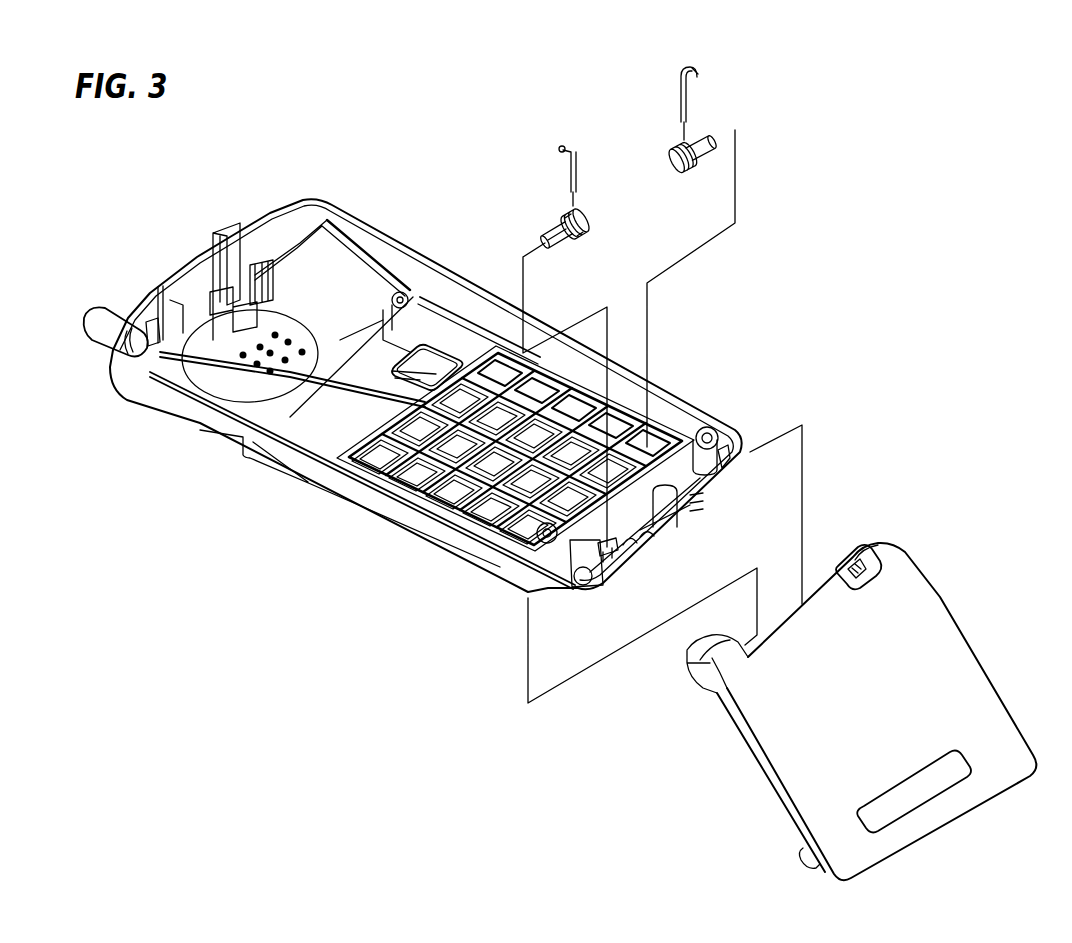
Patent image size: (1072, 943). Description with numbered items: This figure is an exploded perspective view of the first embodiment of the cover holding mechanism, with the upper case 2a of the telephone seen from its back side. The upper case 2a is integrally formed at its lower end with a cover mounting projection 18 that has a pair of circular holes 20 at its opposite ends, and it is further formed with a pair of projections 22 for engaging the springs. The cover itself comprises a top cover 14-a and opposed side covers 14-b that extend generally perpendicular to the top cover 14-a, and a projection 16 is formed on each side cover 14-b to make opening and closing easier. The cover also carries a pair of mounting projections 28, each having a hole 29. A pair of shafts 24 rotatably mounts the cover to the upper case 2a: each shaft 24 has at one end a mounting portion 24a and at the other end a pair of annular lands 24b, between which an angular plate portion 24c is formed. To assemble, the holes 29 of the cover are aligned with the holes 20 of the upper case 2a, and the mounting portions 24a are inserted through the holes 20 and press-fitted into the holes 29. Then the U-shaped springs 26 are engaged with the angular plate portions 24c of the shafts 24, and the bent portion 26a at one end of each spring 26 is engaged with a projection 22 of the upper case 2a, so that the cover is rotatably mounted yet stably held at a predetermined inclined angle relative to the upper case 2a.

The upper case 2a is at (401, 240).
The top cover 14-a is at (800, 740).
The side cover 14-b is at (748, 745).
The projection 16 is at (801, 860).
The cover mounting projection 18 is at (647, 552).
The circular hole 20 is at (578, 580).
The projection 22 is at (600, 552).
The shaft 24 is at (707, 116).
The mounting portion 24a is at (557, 238).
The annular land 24b is at (582, 238).
The angular plate portion 24c is at (565, 215).
The U-shaped spring 26 is at (676, 80).
The bent portion 26a is at (692, 65).
The mounting projection 28 is at (697, 652).
The hole 29 is at (843, 552).